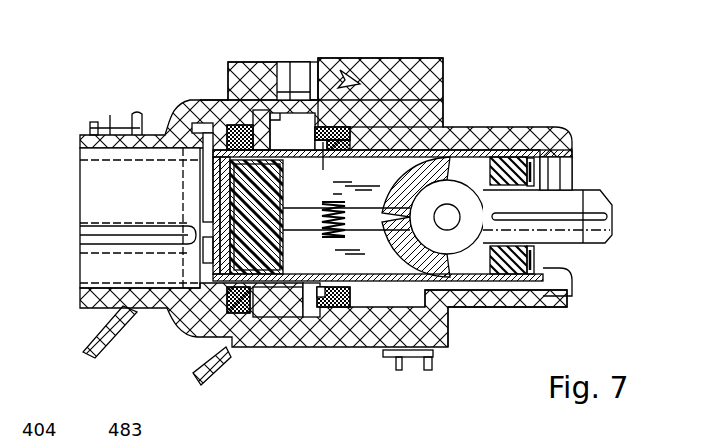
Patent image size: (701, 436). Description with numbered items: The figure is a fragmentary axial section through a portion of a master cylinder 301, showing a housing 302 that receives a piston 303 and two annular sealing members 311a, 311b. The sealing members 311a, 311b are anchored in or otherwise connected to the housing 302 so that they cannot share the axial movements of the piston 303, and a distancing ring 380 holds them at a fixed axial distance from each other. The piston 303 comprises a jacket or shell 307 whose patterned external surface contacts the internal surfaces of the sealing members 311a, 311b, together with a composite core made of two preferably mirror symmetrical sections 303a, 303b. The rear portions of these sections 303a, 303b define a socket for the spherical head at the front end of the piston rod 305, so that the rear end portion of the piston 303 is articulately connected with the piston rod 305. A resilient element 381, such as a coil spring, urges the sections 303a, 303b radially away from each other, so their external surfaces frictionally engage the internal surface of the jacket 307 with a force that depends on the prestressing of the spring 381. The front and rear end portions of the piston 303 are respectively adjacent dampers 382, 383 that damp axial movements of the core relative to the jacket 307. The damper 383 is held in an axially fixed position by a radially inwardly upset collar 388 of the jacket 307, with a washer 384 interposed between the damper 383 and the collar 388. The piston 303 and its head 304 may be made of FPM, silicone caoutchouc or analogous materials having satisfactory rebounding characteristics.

The master cylinder 301 is at (528, 73).
The housing 302 is at (445, 316).
The piston 303 is at (453, 144).
The core section 303a is at (333, 200).
The core section 303b is at (308, 295).
The head 304 is at (470, 174).
The piston rod 305 is at (592, 197).
The jacket 307 is at (497, 279).
The annular sealing member 311a is at (243, 305).
The annular sealing member 311b is at (347, 305).
The distancing ring 380 is at (245, 300).
The resilient element 381 is at (386, 112).
The damper 382 is at (207, 125).
The damper 383 is at (527, 157).
The washer 384 is at (547, 170).
The collar 388 is at (540, 268).